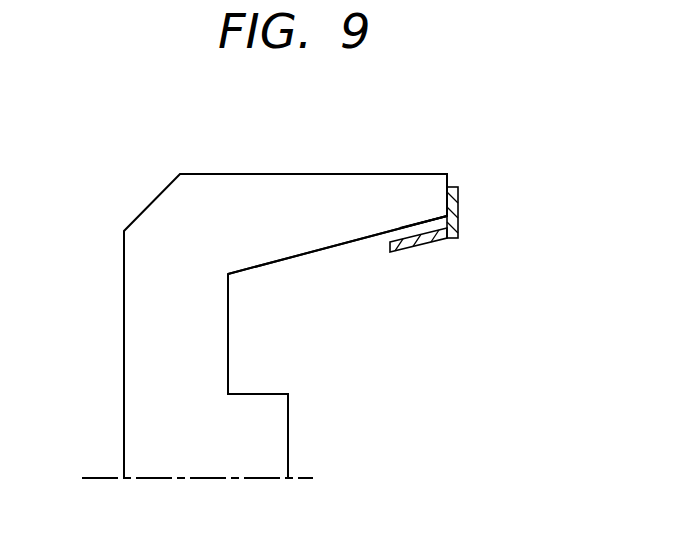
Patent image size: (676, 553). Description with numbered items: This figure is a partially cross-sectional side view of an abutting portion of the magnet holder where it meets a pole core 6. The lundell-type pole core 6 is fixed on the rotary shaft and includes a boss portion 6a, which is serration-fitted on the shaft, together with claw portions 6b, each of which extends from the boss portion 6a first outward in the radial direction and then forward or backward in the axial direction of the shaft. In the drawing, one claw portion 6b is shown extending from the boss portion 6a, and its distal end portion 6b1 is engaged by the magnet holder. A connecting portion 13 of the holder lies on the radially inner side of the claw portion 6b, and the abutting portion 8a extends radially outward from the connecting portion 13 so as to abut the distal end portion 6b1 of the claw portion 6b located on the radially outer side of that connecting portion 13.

The pole core 6 is at (111, 340).
The boss portion 6a is at (263, 437).
The claw portion 6b is at (310, 204).
The distal end portion 6b1 is at (415, 208).
The abutting portion 8a is at (458, 198).
The connecting portion 13 is at (410, 262).